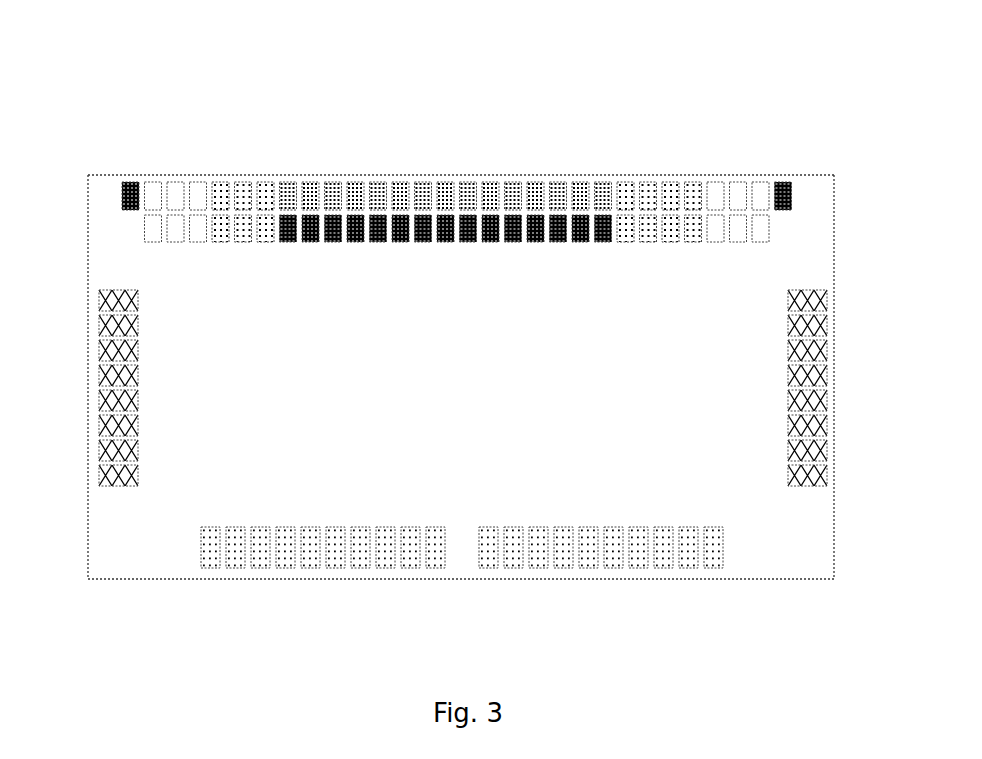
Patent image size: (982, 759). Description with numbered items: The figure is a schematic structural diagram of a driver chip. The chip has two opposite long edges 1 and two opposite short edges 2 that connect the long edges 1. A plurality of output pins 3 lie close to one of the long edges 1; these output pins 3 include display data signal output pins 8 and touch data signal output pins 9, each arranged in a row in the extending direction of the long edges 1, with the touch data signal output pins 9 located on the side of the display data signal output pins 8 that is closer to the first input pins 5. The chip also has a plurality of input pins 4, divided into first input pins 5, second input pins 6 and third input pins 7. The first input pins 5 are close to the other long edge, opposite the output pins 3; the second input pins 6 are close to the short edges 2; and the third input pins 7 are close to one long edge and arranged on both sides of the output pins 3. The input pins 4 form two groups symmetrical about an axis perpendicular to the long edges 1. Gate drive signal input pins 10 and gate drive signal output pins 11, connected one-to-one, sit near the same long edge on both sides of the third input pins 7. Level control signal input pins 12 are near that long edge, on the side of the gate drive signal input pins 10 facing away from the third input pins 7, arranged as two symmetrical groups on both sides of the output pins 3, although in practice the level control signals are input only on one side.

The long edge 1 is at (805, 175).
The short edge 2 is at (840, 196).
The output pins 3 is at (580, 130).
The input pins 4 is at (865, 232).
The first input pins 5 is at (723, 548).
The second input pins 6 is at (827, 330).
The third input pins 7 is at (770, 228).
The display data signal output pins 8 is at (558, 183).
The touch data signal output pins 9 is at (582, 215).
The gate drive signal input pins 10 is at (740, 183).
The gate drive signal output pins 11 is at (177, 182).
The level control signal input pins 12 is at (785, 183).